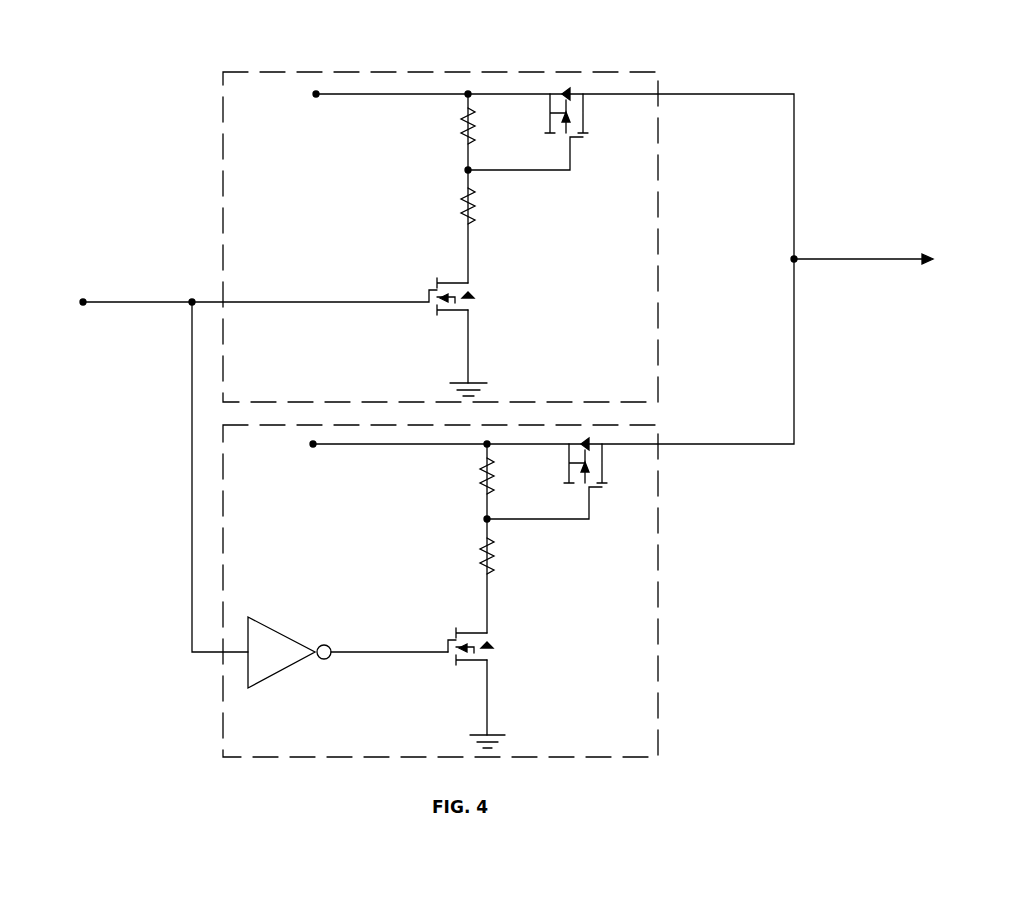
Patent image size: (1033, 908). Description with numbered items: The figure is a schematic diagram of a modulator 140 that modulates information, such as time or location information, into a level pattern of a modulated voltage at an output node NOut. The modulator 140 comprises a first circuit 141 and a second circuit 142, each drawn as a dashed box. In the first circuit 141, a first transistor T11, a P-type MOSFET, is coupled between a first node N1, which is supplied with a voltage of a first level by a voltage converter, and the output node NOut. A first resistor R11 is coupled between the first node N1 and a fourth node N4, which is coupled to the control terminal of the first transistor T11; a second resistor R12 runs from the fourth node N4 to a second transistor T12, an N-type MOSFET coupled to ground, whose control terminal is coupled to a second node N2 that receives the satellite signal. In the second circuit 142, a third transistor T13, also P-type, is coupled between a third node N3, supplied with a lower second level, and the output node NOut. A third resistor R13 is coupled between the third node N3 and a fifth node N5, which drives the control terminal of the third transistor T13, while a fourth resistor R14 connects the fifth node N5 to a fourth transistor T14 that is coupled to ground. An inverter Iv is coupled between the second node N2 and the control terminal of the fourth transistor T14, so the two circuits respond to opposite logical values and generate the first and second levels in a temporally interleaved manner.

The modulator 140 is at (96, 50).
The first circuit 141 is at (689, 297).
The second circuit 142 is at (682, 645).
The first node N1 is at (313, 98).
The second node N2 is at (81, 306).
The third node N3 is at (311, 448).
The fourth node N4 is at (464, 168).
The fifth node N5 is at (484, 517).
The output node NOut is at (796, 255).
The first resistor R11 is at (462, 140).
The second resistor R12 is at (462, 215).
The third resistor R13 is at (480, 490).
The fourth resistor R14 is at (480, 569).
The first transistor T11 is at (586, 120).
The second transistor T12 is at (472, 285).
The third transistor T13 is at (605, 470).
The fourth transistor T14 is at (490, 660).
The inverter Iv is at (276, 675).